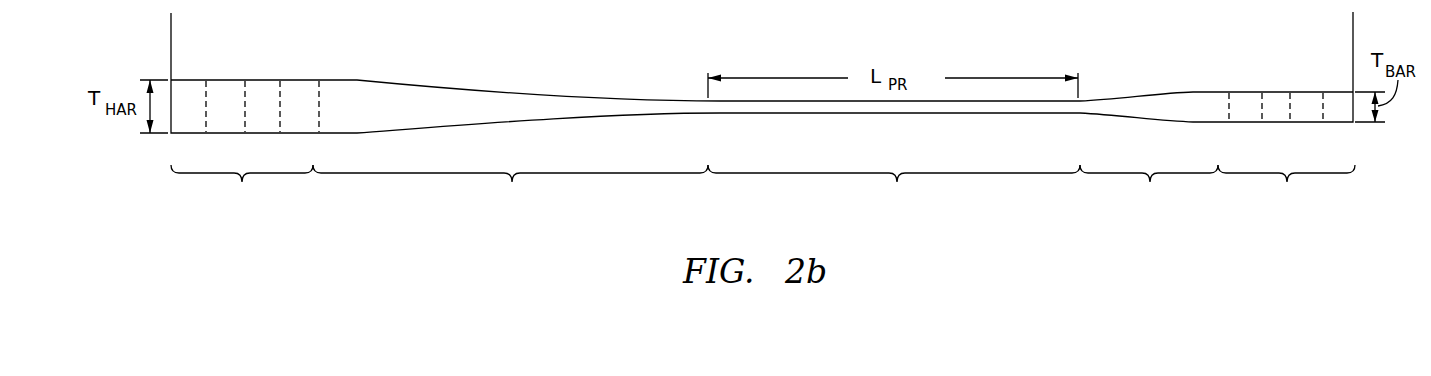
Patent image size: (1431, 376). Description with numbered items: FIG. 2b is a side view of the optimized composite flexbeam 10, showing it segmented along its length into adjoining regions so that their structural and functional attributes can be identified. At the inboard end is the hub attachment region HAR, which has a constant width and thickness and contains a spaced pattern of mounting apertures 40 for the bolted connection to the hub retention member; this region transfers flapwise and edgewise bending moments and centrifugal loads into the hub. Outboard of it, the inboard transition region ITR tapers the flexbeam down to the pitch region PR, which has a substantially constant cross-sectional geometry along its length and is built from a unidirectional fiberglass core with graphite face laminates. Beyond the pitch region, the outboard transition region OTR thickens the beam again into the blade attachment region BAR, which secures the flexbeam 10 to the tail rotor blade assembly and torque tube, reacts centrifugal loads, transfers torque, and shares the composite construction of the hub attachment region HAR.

The composite flexbeam 10 is at (1353, 22).
The mounting apertures 40 is at (245, 97).
The hub attachment region HAR is at (242, 191).
The inboard transition region ITR is at (510, 191).
The pitch region PR is at (894, 191).
The outboard transition region OTR is at (1149, 191).
The blade attachment region BAR is at (1286, 191).